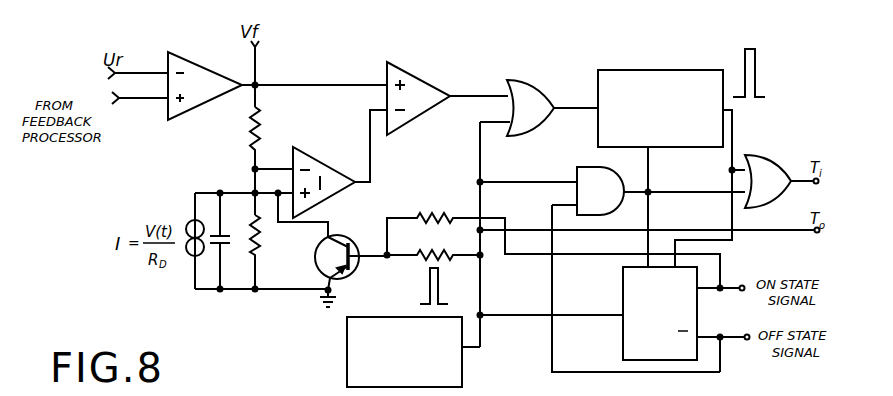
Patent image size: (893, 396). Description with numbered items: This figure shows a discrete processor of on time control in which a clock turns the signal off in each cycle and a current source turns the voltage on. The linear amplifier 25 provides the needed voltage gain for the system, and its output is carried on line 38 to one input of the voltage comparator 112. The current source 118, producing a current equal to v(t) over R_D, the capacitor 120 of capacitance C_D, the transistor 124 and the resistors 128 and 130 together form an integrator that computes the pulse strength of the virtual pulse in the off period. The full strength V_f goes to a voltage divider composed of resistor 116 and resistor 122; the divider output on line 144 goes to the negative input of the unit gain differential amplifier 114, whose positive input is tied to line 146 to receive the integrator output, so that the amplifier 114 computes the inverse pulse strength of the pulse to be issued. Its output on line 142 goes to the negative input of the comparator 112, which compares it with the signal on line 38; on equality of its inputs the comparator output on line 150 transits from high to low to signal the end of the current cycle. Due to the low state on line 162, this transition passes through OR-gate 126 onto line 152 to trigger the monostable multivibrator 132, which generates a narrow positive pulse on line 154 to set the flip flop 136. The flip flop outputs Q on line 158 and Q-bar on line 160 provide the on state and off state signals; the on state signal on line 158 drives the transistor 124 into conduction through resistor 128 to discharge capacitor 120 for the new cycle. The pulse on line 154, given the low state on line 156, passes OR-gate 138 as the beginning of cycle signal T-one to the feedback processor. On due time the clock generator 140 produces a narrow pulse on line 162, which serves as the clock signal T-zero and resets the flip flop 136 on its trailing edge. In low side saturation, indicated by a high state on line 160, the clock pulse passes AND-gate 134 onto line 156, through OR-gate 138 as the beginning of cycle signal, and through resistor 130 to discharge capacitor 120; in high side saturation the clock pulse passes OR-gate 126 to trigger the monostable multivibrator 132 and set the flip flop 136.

The linear amplifier 25 is at (203, 43).
The line 38 is at (328, 84).
The voltage comparator 112 is at (416, 58).
The unit gain differential amplifier 114 is at (334, 158).
The resistor 116 is at (250, 126).
The current source 118 is at (190, 221).
The capacitor 120 is at (240, 224).
The resistor 122 is at (258, 246).
The transistor 124 is at (349, 275).
The OR-gate 126 is at (538, 76).
The resistor 128 is at (440, 213).
The resistor 130 is at (428, 253).
The monostable multivibrator 132 is at (657, 69).
The AND-gate 134 is at (580, 166).
The flip flop 136 is at (622, 294).
The OR-gate 138 is at (765, 164).
The clock generator 140 is at (346, 345).
The line 142 is at (371, 150).
The line 144 is at (270, 167).
The line 146 is at (205, 192).
The line 150 is at (477, 88).
The line 152 is at (564, 104).
The line 154 is at (735, 128).
The line 156 is at (666, 191).
The line 158 is at (703, 291).
The line 160 is at (709, 330).
The line 162 is at (470, 350).